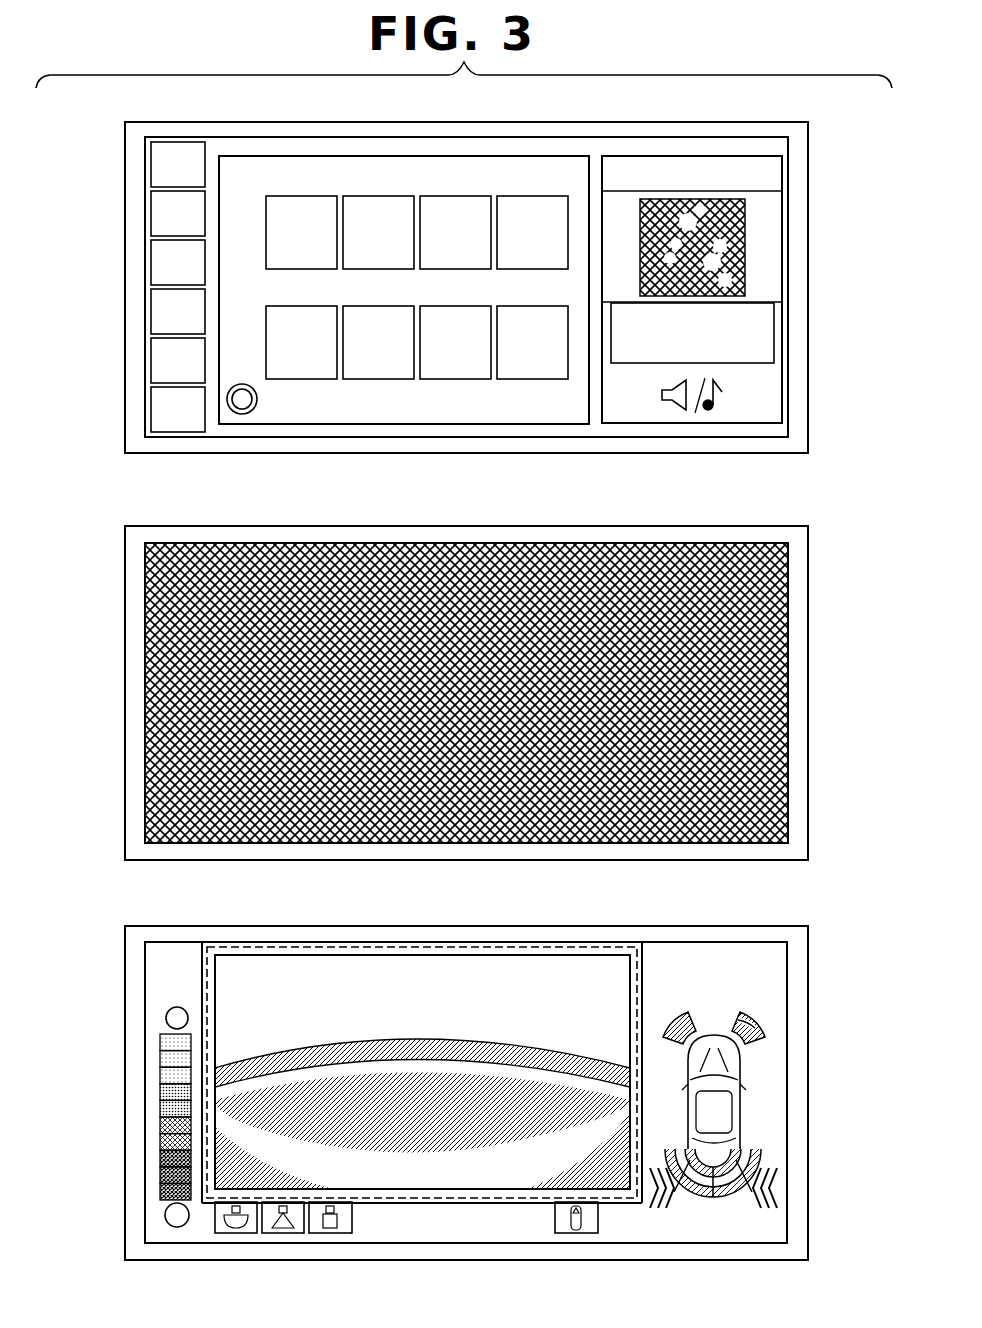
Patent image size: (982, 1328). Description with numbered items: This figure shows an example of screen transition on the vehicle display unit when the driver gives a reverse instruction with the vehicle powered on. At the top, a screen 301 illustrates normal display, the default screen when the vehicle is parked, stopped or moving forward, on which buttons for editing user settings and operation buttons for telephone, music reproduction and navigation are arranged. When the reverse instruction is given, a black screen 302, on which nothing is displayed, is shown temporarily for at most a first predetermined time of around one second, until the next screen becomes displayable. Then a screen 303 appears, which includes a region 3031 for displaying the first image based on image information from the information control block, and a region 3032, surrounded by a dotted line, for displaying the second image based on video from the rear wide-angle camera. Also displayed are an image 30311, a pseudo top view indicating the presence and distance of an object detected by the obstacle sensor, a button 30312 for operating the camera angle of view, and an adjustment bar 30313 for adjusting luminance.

The screen 301 is at (808, 157).
The black screen 302 is at (808, 573).
The screen 303 is at (303, 926).
The region 3031 is at (150, 152).
The region 3032 is at (456, 946).
The image 30311 is at (755, 1008).
The button 30312 is at (238, 1232).
The adjustment bar 30313 is at (155, 1192).